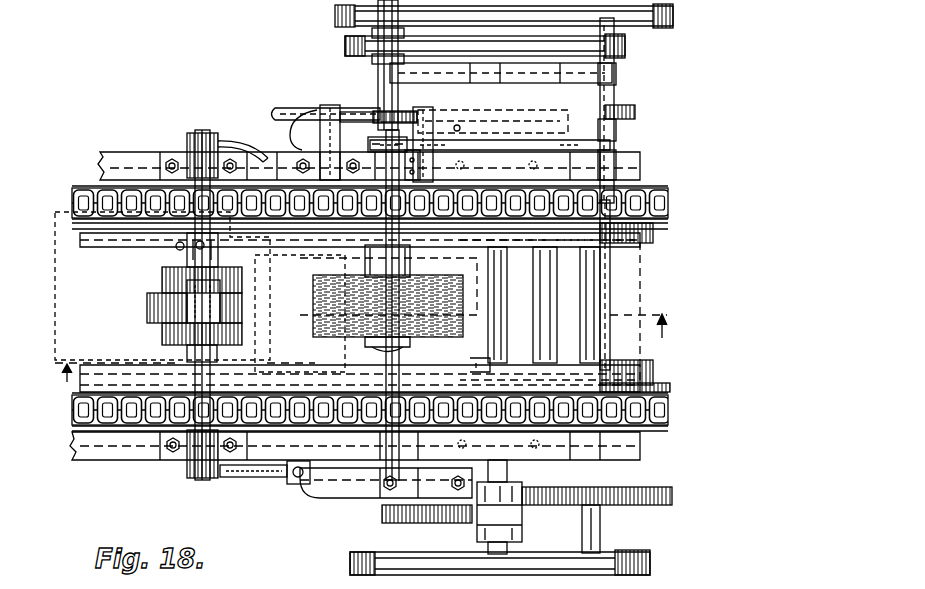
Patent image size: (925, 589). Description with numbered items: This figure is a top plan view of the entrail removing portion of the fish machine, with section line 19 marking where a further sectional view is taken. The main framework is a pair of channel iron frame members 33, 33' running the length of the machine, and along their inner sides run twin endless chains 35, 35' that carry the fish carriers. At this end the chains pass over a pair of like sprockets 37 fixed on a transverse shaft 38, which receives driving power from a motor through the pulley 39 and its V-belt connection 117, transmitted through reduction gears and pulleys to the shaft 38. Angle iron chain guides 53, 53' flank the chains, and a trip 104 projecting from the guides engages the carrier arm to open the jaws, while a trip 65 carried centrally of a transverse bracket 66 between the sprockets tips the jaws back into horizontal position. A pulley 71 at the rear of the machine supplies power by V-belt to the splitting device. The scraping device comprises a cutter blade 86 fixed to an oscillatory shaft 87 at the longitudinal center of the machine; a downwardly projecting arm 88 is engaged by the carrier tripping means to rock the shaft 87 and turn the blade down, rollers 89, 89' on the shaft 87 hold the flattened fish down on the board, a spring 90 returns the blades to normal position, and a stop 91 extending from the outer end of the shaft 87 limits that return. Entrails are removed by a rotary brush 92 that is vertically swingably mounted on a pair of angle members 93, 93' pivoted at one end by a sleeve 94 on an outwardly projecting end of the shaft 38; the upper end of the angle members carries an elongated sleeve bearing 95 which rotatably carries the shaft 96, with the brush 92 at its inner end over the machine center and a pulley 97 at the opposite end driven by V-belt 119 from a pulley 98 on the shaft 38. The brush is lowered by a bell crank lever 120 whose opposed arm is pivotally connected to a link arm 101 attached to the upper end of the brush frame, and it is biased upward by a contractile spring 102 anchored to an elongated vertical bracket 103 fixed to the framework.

The section line 19 is at (362, 345).
The channel iron frame member 33 is at (355, 469).
The channel iron frame member 33' is at (360, 148).
The endless chain 35 is at (345, 413).
The endless chain 35' is at (345, 203).
The sprocket 37 is at (625, 193).
The transverse shaft 38 is at (607, 265).
The pulley 39 is at (657, 360).
The angle iron chain guide 53 is at (331, 387).
The angle iron chain guide 53' is at (330, 246).
The trip 65 is at (546, 298).
The transverse bracket 66 is at (547, 258).
The pulley 71 is at (623, 128).
The cutter blade 86 is at (157, 308).
The oscillatory shaft 87 is at (207, 372).
The arm 88 is at (180, 246).
The roller 89 is at (206, 319).
The roller 89' is at (232, 293).
The spring 90 is at (270, 480).
The stop 91 is at (263, 157).
The rotary brush 92 is at (380, 323).
The angle member 93 is at (493, 112).
The angle member 93' is at (501, 87).
The sleeve 94 is at (607, 100).
The elongated sleeve bearing 95 is at (397, 112).
The shaft 96 is at (377, 248).
The pulley 97 is at (340, 22).
The pulley 98 is at (650, 30).
The link arm 101 is at (330, 150).
The contractile spring 102 is at (383, 100).
The elongated vertical bracket 103 is at (410, 132).
The trip 104 is at (632, 367).
The V-belt connection 117 is at (480, 348).
The V-belt 119 is at (615, 17).
The bell crank lever 120 is at (303, 147).